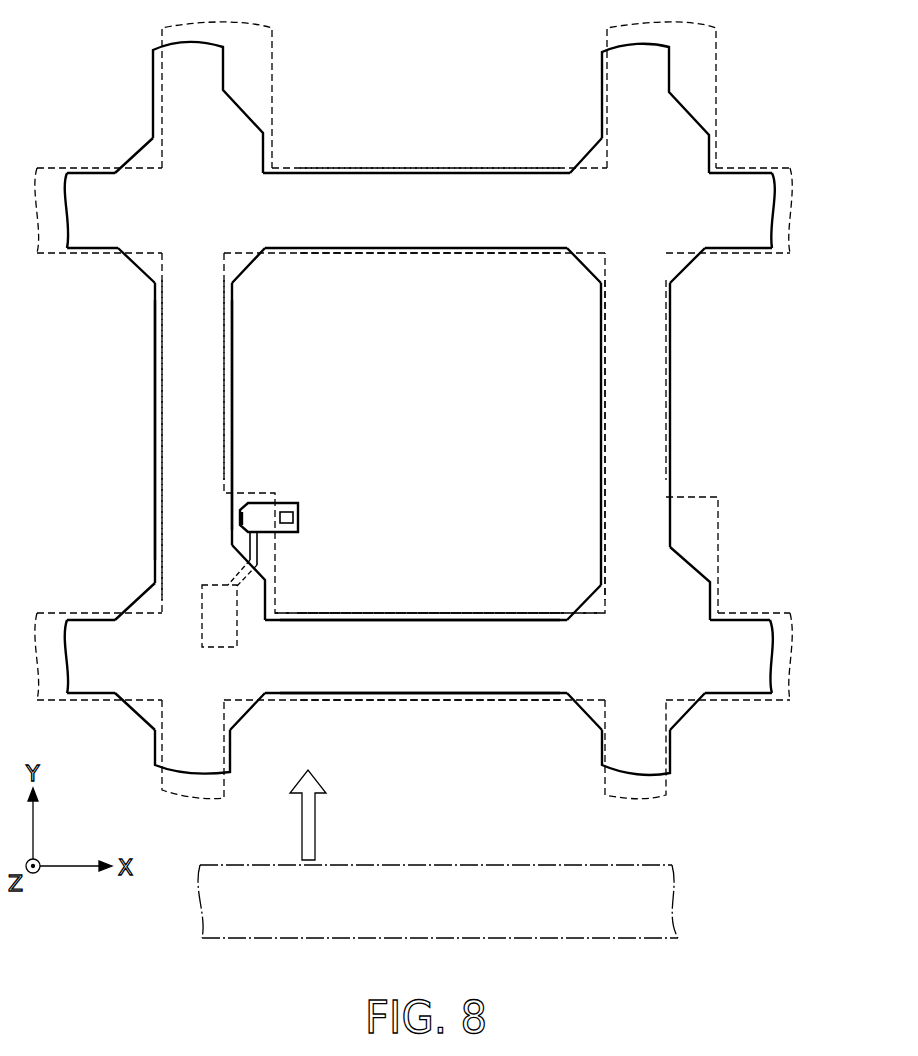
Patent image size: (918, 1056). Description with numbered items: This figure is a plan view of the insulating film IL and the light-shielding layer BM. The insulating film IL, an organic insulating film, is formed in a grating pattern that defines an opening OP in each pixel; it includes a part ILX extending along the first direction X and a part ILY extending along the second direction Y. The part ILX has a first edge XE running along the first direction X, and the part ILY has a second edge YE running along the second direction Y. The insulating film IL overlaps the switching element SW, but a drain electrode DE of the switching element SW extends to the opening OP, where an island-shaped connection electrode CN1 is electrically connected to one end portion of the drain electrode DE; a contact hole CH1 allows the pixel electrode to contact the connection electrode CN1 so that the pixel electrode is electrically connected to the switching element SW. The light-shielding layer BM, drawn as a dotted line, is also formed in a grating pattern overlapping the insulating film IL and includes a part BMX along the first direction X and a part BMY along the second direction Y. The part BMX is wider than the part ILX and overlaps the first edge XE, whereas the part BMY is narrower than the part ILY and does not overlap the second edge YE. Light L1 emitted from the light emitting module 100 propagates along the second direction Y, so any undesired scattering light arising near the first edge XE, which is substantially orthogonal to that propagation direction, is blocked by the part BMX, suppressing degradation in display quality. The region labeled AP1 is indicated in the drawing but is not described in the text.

The insulating film IL is at (690, 268).
The part extending along the first direction X ILX is at (336, 200).
The part extending along the second direction Y ILY is at (185, 325).
The second edge YE is at (155, 360).
The first edge XE is at (488, 697).
The light-shielding layer BM is at (792, 210).
The part extending along the first direction X BMX is at (528, 168).
The part extending along the second direction Y BMY is at (157, 413).
The opening OP is at (565, 543).
The first aperture AP1 is at (380, 256).
The drain electrode DE is at (252, 538).
The contact hole CH1 is at (284, 503).
The connection electrode CN1 is at (240, 512).
The switching element SW is at (213, 585).
The light L1 is at (312, 823).
The light emitting module 100 is at (674, 893).